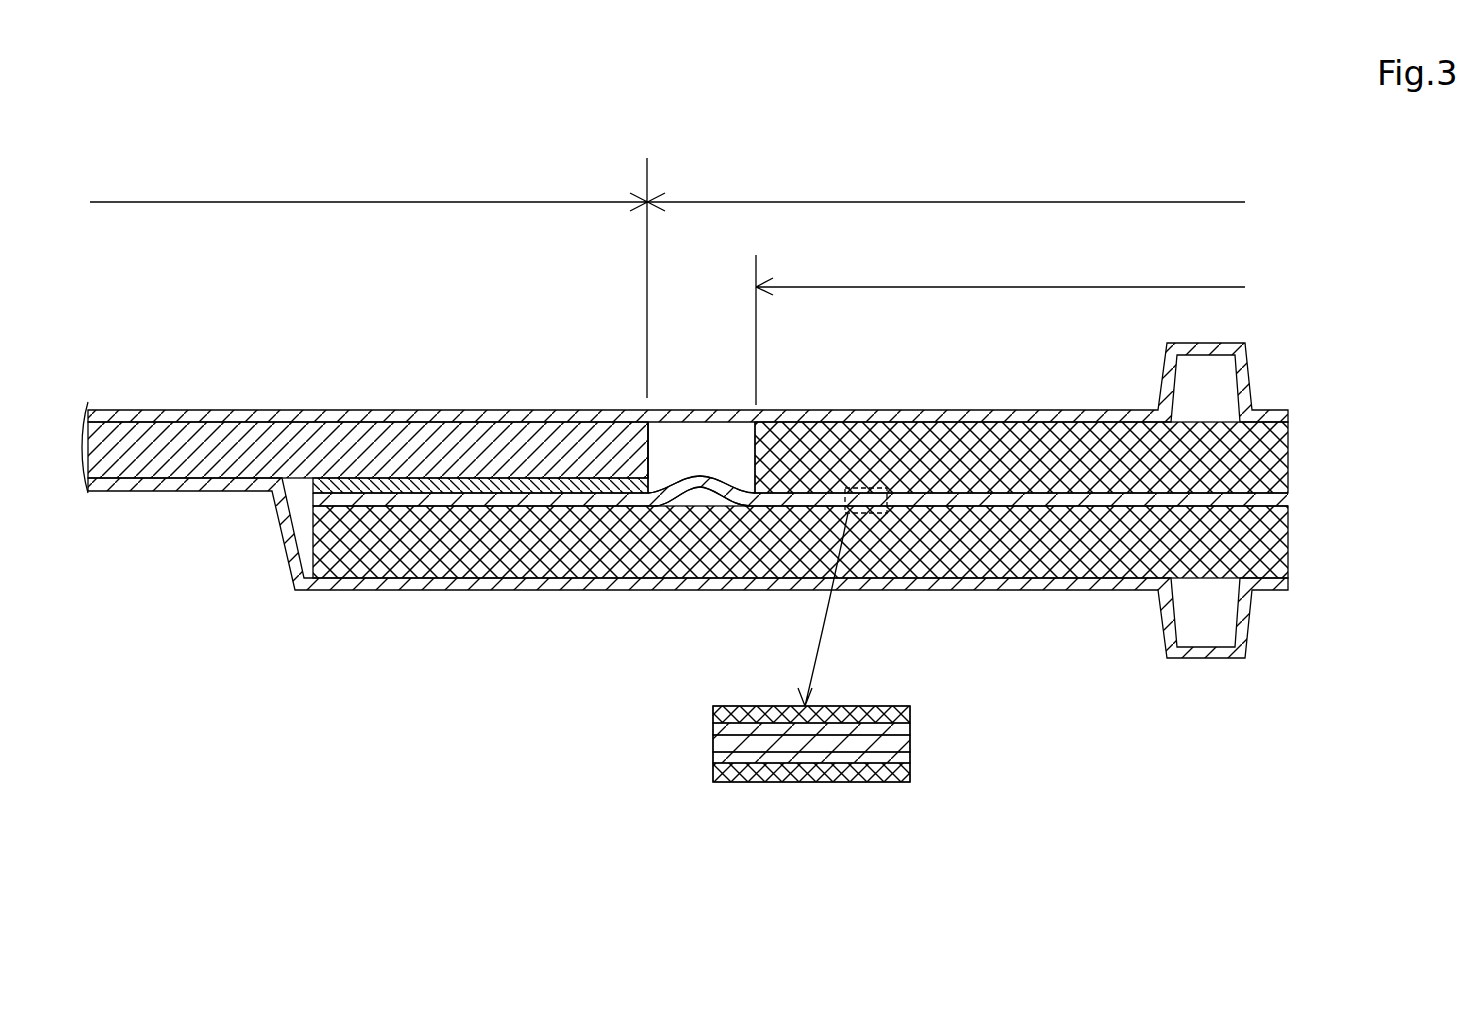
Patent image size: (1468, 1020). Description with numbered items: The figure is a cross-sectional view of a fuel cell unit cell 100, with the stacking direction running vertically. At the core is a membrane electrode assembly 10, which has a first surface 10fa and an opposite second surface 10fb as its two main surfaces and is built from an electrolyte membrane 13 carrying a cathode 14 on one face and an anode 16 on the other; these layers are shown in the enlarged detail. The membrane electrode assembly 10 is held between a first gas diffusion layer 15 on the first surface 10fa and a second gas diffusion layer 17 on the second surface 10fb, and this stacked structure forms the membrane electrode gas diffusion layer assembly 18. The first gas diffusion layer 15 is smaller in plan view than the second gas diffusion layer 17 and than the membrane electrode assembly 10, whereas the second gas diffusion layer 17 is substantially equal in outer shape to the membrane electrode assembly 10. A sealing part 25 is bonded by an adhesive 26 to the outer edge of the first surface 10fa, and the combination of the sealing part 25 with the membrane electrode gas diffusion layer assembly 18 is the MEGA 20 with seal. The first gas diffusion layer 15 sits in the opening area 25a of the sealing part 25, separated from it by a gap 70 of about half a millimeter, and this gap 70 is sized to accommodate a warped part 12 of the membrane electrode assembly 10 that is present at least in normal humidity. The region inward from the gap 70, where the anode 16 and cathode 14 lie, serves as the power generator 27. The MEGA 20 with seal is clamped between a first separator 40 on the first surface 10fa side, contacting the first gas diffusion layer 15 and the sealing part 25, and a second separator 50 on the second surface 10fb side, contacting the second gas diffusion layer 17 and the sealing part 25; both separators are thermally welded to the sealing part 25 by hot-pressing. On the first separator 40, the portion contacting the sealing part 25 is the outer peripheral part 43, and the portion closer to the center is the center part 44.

The unit cell 100 is at (1260, 151).
The membrane electrode assembly 10 is at (1287, 500).
The first surface 10fa is at (977, 495).
The second surface 10fb is at (1020, 508).
The warped part 12 is at (695, 492).
The electrolyte membrane 13 is at (903, 743).
The cathode 14 is at (902, 728).
The first gas diffusion layer 15 is at (1287, 453).
The anode 16 is at (903, 758).
The second gas diffusion layer 17 is at (1287, 535).
The membrane electrode gas diffusion layer assembly 18 is at (1353, 435).
The MEGA with seal 20 is at (764, 583).
The sealing part 25 is at (292, 443).
The opening area 25a is at (650, 448).
The adhesive 26 is at (490, 485).
The power generator 27 is at (1000, 330).
The first separator 40 is at (892, 420).
The outer peripheral part 43 is at (377, 278).
The center part 44 is at (946, 180).
The second separator 50 is at (882, 580).
The gap 70 is at (727, 440).